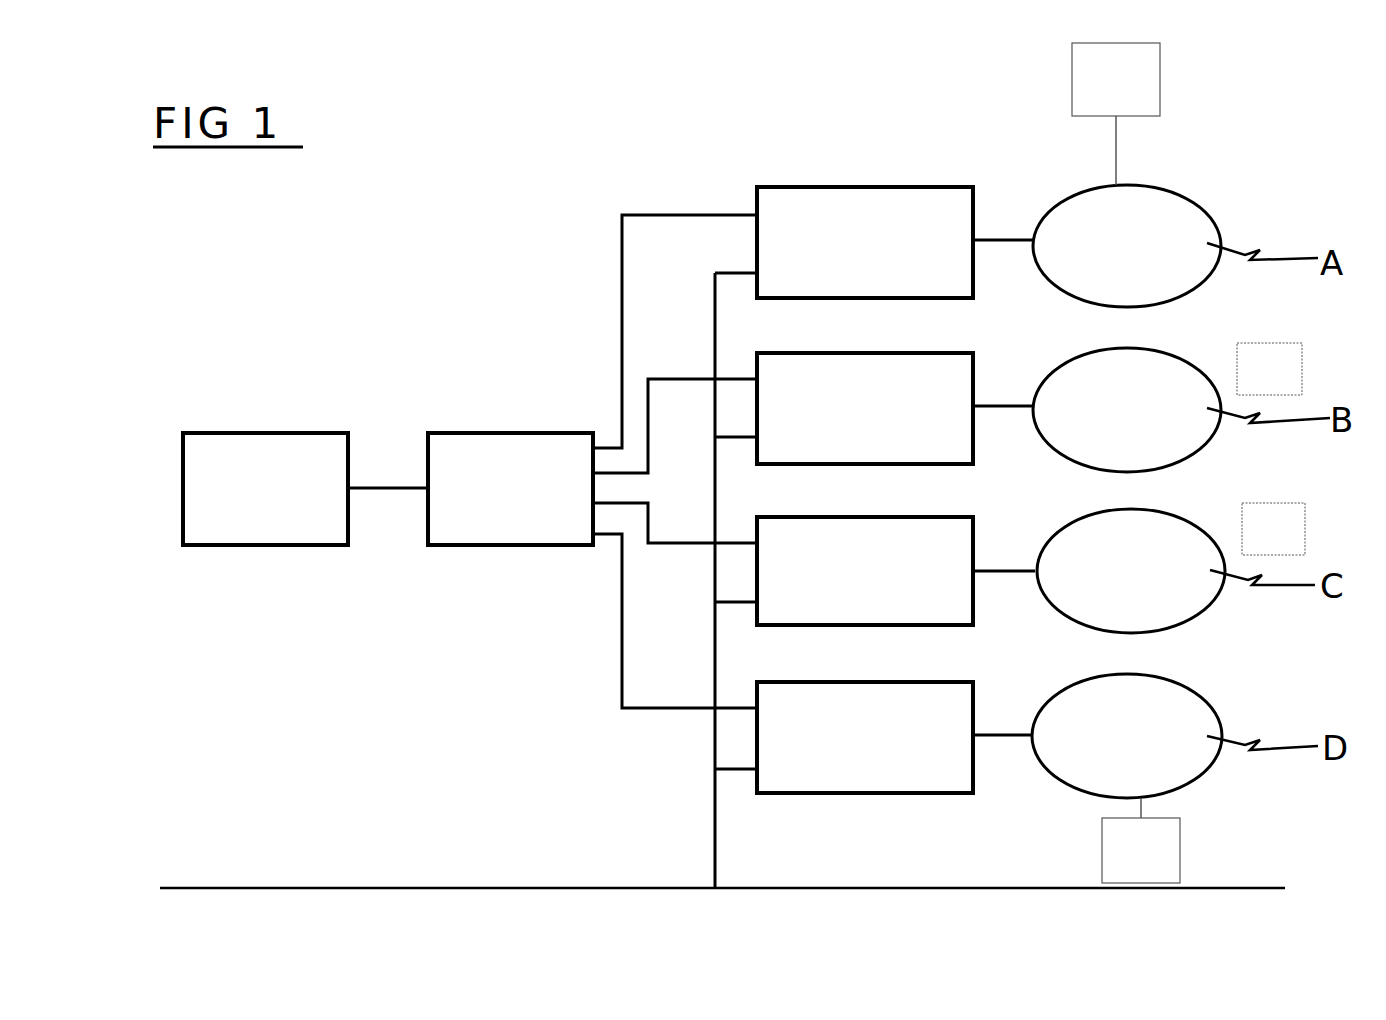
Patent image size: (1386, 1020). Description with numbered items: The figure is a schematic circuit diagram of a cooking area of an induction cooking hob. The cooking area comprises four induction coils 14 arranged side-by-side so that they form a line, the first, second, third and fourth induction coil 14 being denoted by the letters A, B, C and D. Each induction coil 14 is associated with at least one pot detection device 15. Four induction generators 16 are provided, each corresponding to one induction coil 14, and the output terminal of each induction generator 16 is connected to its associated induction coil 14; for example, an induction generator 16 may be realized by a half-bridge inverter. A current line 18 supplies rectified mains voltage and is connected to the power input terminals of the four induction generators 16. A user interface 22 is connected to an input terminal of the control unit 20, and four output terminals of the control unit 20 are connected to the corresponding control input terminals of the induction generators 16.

The induction coil 14 is at (1183, 208).
The pot detection device 15 is at (1188, 463).
The induction generator 16 is at (843, 207).
The current line 18 is at (372, 887).
The control unit 20 is at (475, 458).
The user interface 22 is at (265, 455).